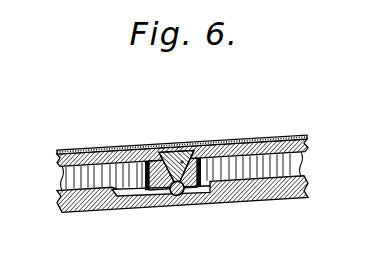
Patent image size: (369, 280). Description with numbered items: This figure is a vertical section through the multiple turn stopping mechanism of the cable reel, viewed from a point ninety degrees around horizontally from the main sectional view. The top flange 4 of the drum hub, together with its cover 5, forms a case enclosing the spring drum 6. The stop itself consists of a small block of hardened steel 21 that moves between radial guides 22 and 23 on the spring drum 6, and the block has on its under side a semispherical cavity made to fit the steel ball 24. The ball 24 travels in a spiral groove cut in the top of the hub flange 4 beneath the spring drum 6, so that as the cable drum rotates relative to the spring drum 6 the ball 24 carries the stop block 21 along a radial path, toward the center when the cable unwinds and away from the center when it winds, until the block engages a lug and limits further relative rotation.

The top flange 4 is at (113, 209).
The cover 5 is at (262, 143).
The spring drum 6 is at (118, 156).
The stop block 21 is at (186, 152).
The radial guide 22 is at (162, 152).
The radial guide 23 is at (193, 205).
The steel ball 24 is at (171, 206).